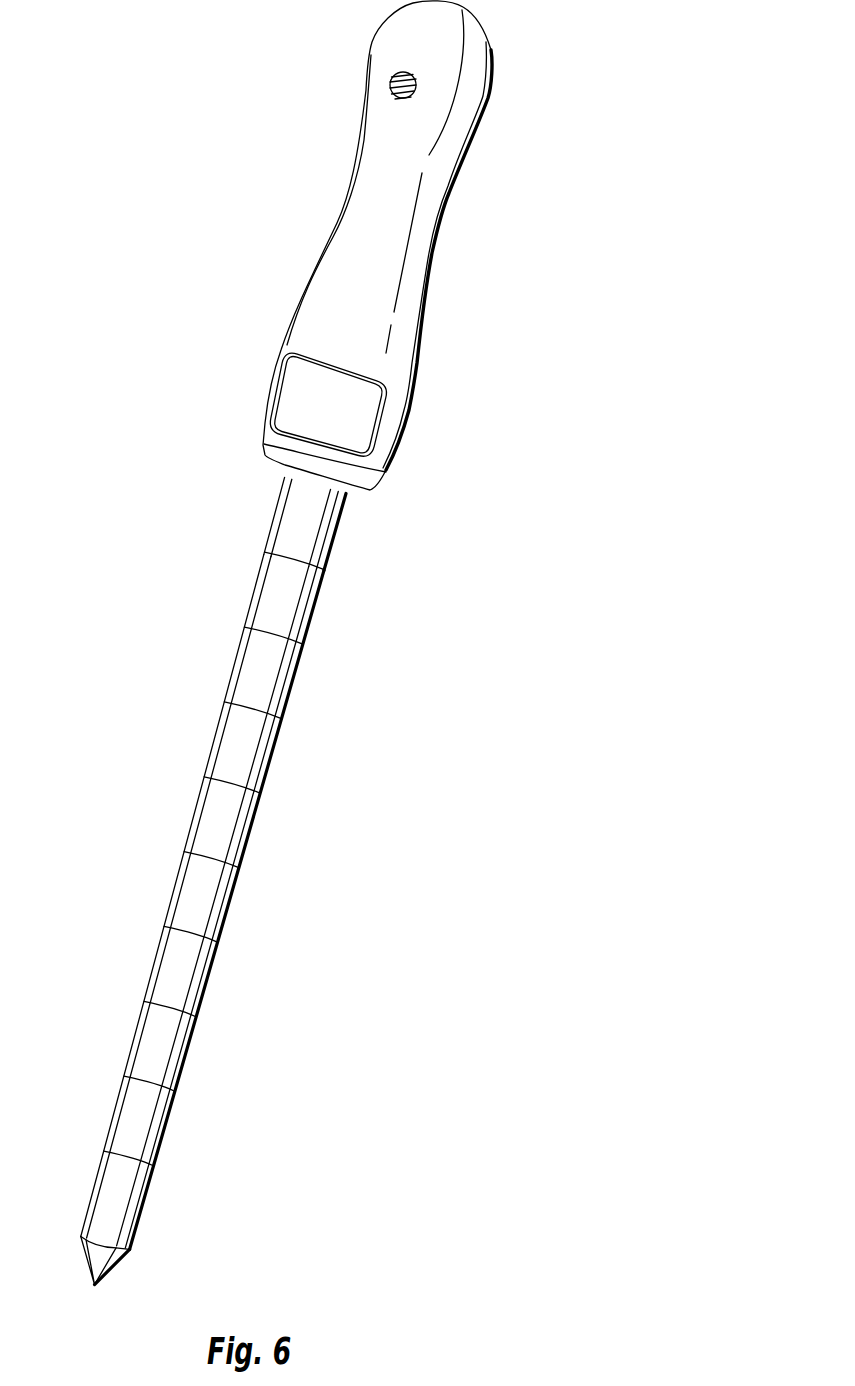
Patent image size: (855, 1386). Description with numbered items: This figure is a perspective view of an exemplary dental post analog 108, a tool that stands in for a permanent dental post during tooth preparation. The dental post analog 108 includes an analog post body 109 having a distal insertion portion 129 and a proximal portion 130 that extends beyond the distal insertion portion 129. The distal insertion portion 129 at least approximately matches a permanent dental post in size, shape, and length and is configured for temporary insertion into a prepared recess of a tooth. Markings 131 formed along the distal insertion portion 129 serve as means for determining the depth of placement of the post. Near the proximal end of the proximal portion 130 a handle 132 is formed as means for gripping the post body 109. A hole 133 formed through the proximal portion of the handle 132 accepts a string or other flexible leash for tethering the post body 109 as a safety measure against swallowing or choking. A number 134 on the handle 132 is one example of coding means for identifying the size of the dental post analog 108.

The dental post analog 108 is at (478, 672).
The analog post body 109 is at (263, 598).
The distal insertion portion 129 is at (62, 1010).
The proximal portion 130 is at (425, 517).
The markings 131 is at (153, 1165).
The handle 132 is at (493, 242).
The hole 133 is at (553, 115).
The number 134 is at (265, 397).